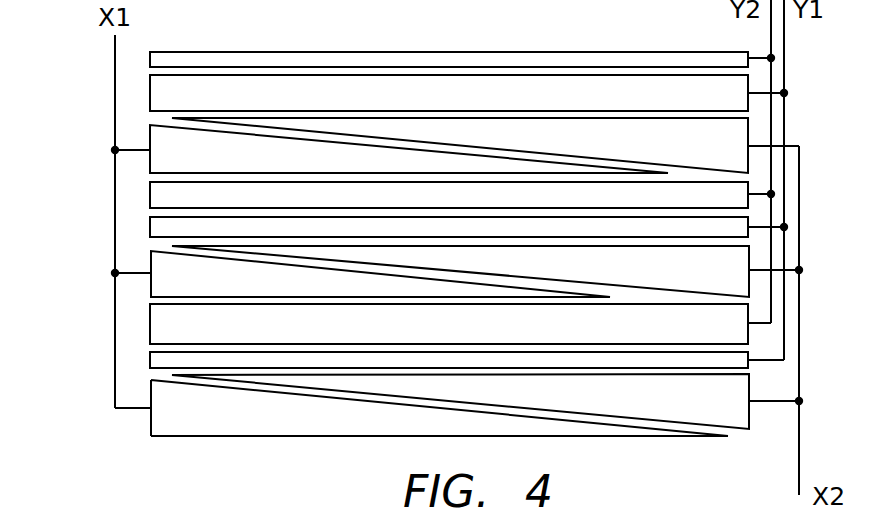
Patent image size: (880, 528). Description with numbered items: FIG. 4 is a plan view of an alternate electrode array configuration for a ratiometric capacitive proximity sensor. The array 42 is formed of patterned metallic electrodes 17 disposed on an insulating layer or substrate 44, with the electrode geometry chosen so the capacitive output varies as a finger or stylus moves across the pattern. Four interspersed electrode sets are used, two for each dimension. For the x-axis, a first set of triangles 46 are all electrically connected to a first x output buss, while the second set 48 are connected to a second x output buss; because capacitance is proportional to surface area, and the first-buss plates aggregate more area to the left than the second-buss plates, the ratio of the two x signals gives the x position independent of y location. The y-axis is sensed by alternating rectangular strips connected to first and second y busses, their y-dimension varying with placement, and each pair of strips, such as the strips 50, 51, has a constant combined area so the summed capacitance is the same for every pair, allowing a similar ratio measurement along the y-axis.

The electrodes 17 is at (362, 443).
The electrode array 42 is at (240, 443).
The insulating layer or substrate 44 is at (660, 476).
The first set of triangles 46 is at (212, 292).
The second set of triangles 48 is at (722, 288).
The y-axis strip 50 is at (163, 93).
The y-axis strip 51 is at (218, 60).